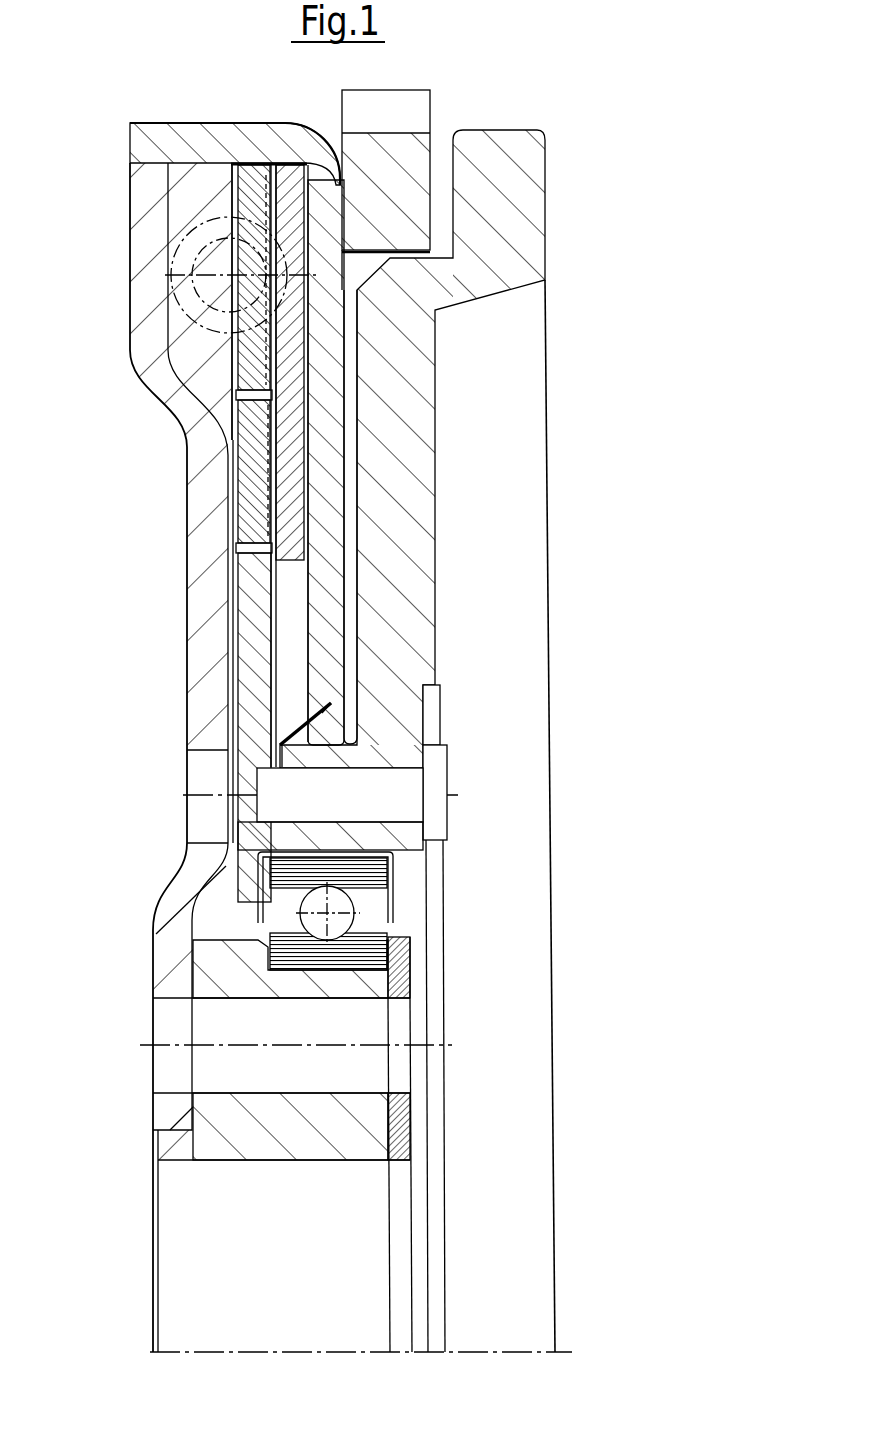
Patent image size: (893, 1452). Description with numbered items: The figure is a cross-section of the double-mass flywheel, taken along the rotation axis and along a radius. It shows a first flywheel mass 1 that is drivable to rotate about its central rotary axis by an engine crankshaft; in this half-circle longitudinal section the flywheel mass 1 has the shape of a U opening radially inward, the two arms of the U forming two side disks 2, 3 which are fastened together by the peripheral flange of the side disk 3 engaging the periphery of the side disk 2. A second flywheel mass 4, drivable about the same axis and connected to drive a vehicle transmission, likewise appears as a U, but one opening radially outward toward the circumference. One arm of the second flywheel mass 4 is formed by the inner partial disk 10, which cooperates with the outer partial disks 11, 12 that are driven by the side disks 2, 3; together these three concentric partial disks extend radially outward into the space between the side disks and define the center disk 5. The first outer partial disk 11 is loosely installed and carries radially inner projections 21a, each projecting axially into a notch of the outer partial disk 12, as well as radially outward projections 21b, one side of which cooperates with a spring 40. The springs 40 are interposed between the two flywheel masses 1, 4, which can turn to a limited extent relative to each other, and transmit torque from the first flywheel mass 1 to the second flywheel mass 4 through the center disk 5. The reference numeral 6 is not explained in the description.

The first flywheel mass 1 is at (138, 446).
The side disk 2 is at (145, 228).
The side disk 3 is at (330, 551).
The second flywheel mass 4 is at (448, 436).
The center disk 5 is at (213, 190).
The armature disc 6 is at (288, 673).
The inner partial disk 10 is at (252, 587).
The first outer partial disk 11 is at (290, 378).
The outer partial disk 12 is at (246, 366).
The radially inner projection 21a is at (257, 514).
The radially outward projection 21b is at (262, 168).
The spring 40 is at (200, 322).